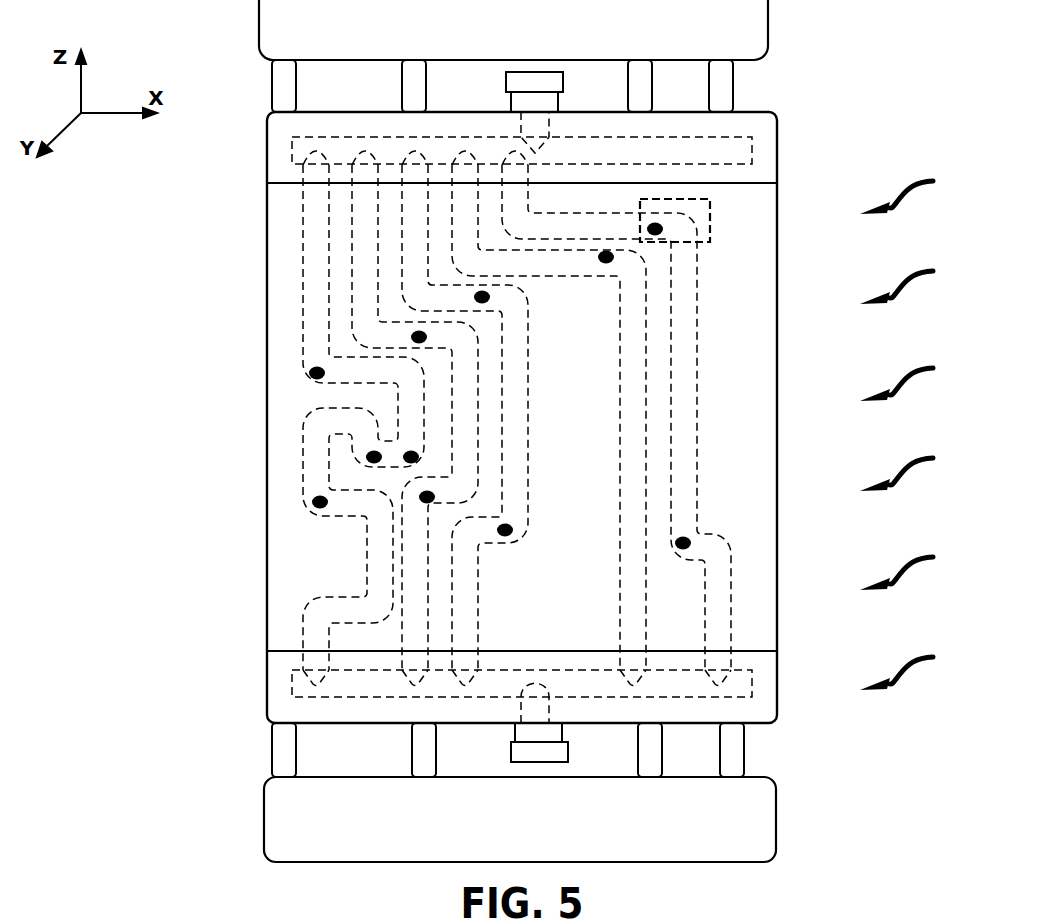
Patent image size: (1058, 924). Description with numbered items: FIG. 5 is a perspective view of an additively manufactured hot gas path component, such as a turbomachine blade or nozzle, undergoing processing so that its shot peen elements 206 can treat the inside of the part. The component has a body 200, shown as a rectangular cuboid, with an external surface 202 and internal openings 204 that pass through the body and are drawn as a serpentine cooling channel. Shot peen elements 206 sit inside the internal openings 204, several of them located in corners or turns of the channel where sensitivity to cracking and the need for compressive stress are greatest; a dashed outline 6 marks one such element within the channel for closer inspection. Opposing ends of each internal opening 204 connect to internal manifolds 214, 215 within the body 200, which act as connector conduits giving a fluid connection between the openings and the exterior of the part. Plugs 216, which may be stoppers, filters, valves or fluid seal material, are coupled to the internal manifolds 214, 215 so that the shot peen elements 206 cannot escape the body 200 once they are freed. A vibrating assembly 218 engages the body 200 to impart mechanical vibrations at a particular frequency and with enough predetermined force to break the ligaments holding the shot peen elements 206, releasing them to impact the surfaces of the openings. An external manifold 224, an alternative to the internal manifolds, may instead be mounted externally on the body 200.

The detail region 6 is at (710, 210).
The body 200 is at (250, 526).
The external surface 202 is at (794, 274).
The internal opening 204 is at (647, 352).
The shot peen element 206 is at (317, 373).
The internal manifold 214 is at (318, 168).
The internal manifold 215 is at (370, 686).
The plug 216 is at (537, 84).
The vibrating assembly 218 is at (370, 31).
The external manifold 224 is at (773, 676).